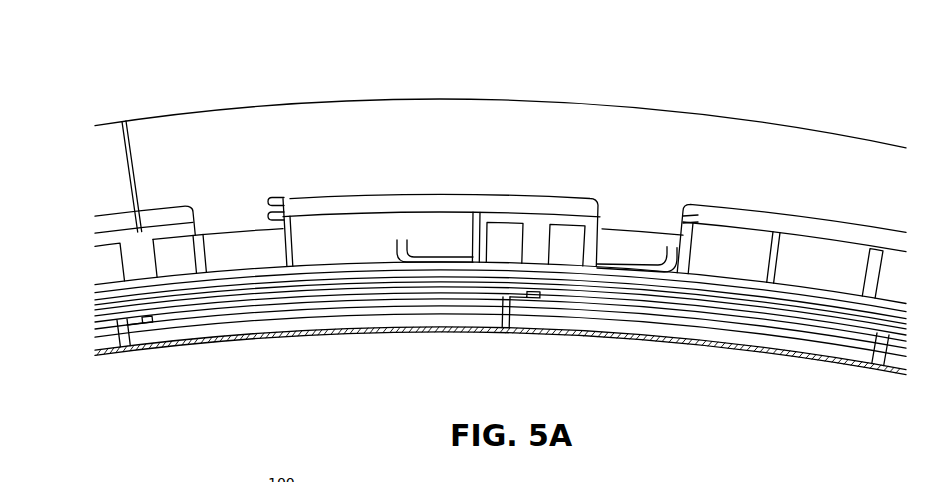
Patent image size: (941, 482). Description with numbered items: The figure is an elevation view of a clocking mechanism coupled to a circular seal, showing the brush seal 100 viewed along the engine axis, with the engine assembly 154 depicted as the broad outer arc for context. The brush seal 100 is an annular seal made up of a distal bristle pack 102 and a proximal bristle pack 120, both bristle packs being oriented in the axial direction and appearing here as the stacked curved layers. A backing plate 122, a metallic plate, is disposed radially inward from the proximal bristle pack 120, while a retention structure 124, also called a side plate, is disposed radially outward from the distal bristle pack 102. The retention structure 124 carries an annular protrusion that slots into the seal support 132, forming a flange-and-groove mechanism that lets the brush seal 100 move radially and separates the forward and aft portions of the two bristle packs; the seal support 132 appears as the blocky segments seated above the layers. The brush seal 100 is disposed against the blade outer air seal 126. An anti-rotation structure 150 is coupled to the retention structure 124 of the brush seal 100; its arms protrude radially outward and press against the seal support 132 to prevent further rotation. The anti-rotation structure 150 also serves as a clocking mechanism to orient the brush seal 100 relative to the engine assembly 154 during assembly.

The brush seal 100 is at (100, 317).
The distal bristle pack 102 is at (123, 297).
The proximal bristle pack 120 is at (190, 297).
The backing plate 122 is at (220, 302).
The retention structure 124 is at (277, 267).
The blade outer air seal 126 is at (508, 247).
The seal support 132 is at (345, 250).
The anti-rotation structure 150 is at (614, 265).
The engine assembly 154 is at (502, 125).